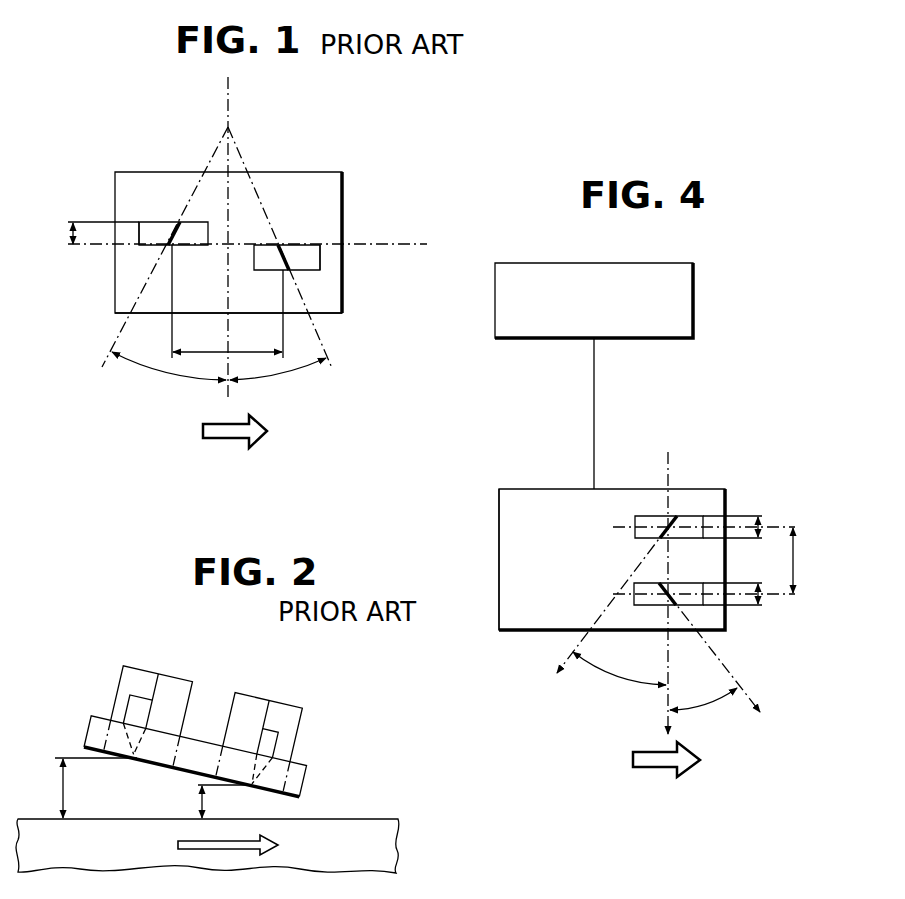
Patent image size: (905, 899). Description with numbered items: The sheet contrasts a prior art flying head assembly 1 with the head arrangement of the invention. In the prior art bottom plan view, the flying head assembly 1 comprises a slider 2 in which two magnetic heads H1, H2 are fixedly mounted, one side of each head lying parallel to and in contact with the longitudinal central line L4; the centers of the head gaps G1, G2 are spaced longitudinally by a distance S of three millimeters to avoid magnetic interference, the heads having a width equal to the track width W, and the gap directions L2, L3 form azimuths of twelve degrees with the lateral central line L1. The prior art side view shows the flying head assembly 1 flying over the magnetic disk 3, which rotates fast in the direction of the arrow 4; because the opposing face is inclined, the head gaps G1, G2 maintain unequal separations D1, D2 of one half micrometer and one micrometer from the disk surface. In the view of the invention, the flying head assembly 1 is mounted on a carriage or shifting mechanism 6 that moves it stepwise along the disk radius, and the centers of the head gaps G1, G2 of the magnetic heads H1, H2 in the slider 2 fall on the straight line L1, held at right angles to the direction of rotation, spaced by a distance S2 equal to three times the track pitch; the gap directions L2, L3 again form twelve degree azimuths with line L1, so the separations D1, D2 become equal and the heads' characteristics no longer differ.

In FIG. 1, the flying head assembly 1 is at (342, 192).
In FIG. 2, the flying head assembly 1 is at (300, 772).
In FIG. 4, the flying head assembly 1 is at (533, 495).
In FIG. 1, the slider 2 is at (342, 278).
In FIG. 2, the slider 2 is at (90, 730).
In FIG. 4, the slider 2 is at (499, 560).
In FIG. 2, the magnetic disk 3 is at (398, 840).
In FIG. 2, the arrow indicating direction of rotation 4 is at (230, 850).
In FIG. 4, the arrow indicating direction of rotation 4 is at (655, 768).
In FIG. 4, the carriage or shifting mechanism 6 is at (694, 294).
In FIG. 1, the magnetic head H1 is at (320, 257).
In FIG. 2, the magnetic head H1 is at (252, 702).
In FIG. 4, the magnetic head H1 is at (693, 603).
In FIG. 1, the magnetic head H2 is at (137, 232).
In FIG. 2, the magnetic head H2 is at (143, 672).
In FIG. 4, the magnetic head H2 is at (693, 520).
In FIG. 1, the head gap G1 is at (284, 248).
In FIG. 2, the head gap G1 is at (250, 783).
In FIG. 4, the head gap G1 is at (664, 598).
In FIG. 1, the head gap G2 is at (172, 228).
In FIG. 2, the head gap G2 is at (137, 751).
In FIG. 4, the head gap G2 is at (660, 524).
In FIG. 1, the lateral central line L1 is at (229, 93).
In FIG. 4, the lateral central line L1 is at (666, 470).
In FIG. 1, the gap direction L2 is at (322, 337).
In FIG. 4, the gap direction L2 is at (748, 690).
In FIG. 1, the gap direction L3 is at (118, 340).
In FIG. 4, the gap direction L3 is at (567, 657).
In FIG. 1, the longitudinal central line L4 is at (408, 243).
In FIG. 1, the track width W is at (93, 234).
In FIG. 4, the track width W is at (762, 527).
In FIG. 1, the distance between gap centers S is at (227, 301).
In FIG. 4, the distance between gap centers S2 is at (831, 560).
In FIG. 2, the separation D1 is at (213, 801).
In FIG. 2, the separation D2 is at (85, 788).